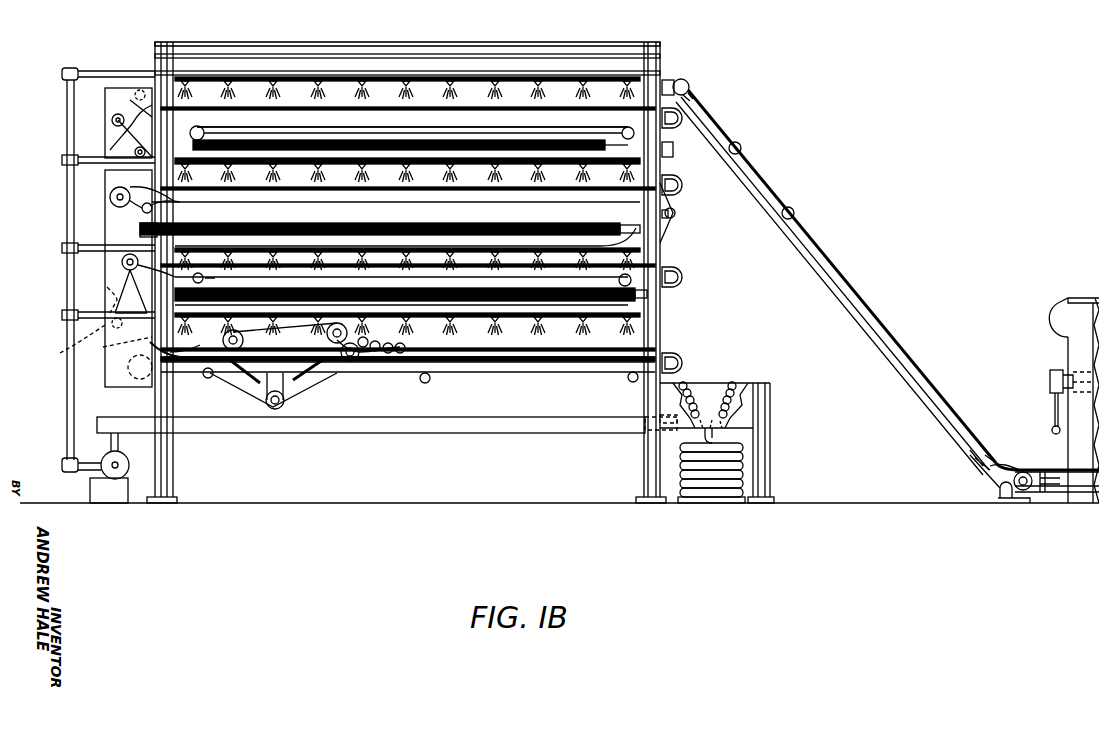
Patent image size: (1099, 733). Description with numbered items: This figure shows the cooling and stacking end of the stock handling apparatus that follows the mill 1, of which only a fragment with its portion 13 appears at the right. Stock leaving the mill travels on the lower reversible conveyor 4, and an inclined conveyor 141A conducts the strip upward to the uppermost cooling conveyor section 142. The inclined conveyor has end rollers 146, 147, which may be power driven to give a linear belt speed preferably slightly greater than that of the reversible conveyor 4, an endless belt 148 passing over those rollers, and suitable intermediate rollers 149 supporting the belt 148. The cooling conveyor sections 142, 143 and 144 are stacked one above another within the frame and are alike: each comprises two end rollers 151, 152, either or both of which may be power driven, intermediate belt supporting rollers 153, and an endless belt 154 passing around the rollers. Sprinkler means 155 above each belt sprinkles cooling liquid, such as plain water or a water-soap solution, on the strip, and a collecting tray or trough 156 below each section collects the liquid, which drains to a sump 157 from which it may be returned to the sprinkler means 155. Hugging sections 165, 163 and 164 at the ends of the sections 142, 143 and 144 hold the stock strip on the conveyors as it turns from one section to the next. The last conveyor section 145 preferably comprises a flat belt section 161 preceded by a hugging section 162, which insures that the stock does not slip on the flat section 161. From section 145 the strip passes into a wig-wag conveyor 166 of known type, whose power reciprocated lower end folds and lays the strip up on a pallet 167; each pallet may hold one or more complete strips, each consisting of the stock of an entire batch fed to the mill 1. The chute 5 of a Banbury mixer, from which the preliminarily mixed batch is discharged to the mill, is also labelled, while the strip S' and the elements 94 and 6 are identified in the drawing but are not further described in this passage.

The chute 5 is at (279, 32).
The hugging section 165 is at (124, 100).
The hugging section 163 is at (66, 344).
The end roller 152 is at (174, 128).
The intermediate belt supporting rollers 153 is at (204, 134).
The endless belt 154 is at (426, 128).
The sprinkler means 155 is at (507, 158).
The collecting tray or trough 156 is at (560, 140).
The uppermost cooling conveyor section 142 is at (599, 116).
The cooling conveyor section 143 is at (277, 200).
The cooling conveyor section 144 is at (470, 276).
The last conveyor section 145 is at (609, 386).
The flat belt section 161 is at (526, 364).
The hugging section 162 is at (322, 381).
The sump 157 is at (450, 435).
The end roller 151 is at (684, 128).
The hugging section 164 is at (676, 228).
The upper pulley 146 is at (686, 82).
The inclined conveyor 141A is at (860, 274).
The intermediate rollers 149 is at (740, 144).
The endless belt 148 is at (794, 218).
The lower bracket 147 is at (998, 492).
The pulley 94 is at (1025, 492).
The reversible conveyor 4 is at (1070, 506).
The strip material S' is at (1005, 445).
The mill 1 is at (1054, 357).
The head 13 is at (1062, 312).
The wig-wag conveyor 166 is at (716, 394).
The coil 6 is at (748, 470).
The pallet 167 is at (716, 504).